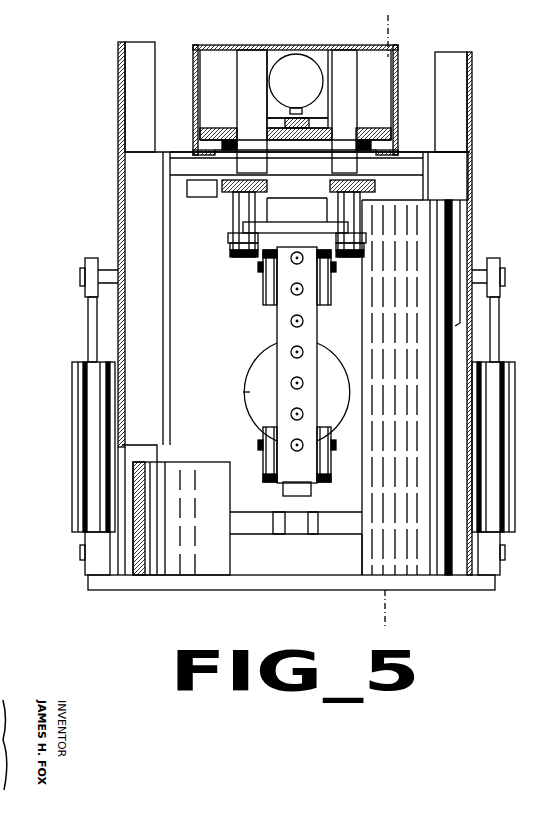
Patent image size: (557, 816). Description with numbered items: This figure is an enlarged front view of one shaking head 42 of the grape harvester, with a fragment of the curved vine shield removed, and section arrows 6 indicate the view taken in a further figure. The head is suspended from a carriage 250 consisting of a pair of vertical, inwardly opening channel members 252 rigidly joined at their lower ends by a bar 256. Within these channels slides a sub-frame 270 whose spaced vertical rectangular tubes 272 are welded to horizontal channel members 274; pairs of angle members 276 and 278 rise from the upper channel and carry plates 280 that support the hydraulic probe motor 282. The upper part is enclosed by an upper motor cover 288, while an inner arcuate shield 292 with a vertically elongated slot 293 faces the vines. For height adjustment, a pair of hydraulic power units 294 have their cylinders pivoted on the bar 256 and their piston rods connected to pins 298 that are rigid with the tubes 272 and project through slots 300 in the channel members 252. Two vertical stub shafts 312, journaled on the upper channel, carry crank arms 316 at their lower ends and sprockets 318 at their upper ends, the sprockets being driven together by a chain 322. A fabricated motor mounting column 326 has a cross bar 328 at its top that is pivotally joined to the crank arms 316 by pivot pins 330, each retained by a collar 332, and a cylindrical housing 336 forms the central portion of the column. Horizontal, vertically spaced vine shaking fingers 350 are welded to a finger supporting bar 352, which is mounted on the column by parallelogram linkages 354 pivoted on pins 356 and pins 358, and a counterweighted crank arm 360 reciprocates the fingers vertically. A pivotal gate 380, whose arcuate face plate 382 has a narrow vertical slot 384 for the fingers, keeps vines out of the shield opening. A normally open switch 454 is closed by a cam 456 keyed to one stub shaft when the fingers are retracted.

The section line 6- 6 is at (392, 26).
The shaking head 42 is at (80, 203).
The carriage 250 is at (110, 84).
The channel members 252 is at (132, 60).
The bar 256 is at (245, 595).
The sub-frame 270 is at (474, 163).
The tubes 272 is at (133, 165).
The channel members 274 is at (428, 153).
The angle members 276 is at (242, 60).
The angle members 278 is at (348, 66).
The plates 280 is at (318, 47).
The hydraulic probe motor 282 is at (311, 90).
The upper motor cover 288 is at (193, 46).
The inner arcuate shield 292 is at (246, 569).
The slot 293 is at (360, 530).
The hydraulic power units 294 is at (80, 435).
The pins 298 is at (82, 275).
The slots 300 is at (120, 212).
The stub shafts 312 is at (225, 220).
The crank arms 316 is at (333, 208).
The sprockets 318 is at (213, 130).
The chain 322 is at (322, 140).
The motor mounting column 326 is at (232, 258).
The cross bar 328 is at (232, 244).
The pivot pins 330 is at (240, 288).
The collar 332 is at (232, 272).
The cylindrical housing 336 is at (258, 362).
The vine shaking fingers 350 is at (303, 383).
The finger supporting bar 352 is at (283, 403).
The parallelogram linkages 354 is at (265, 285).
The pins 356 is at (333, 297).
The pins 358 is at (263, 280).
The counterweighted crank arm 360 is at (255, 397).
The pivotal gate 380 is at (240, 512).
The face plate 382 is at (323, 528).
The slot 384 is at (297, 512).
The switch 454 is at (193, 187).
The cam 456 is at (240, 185).